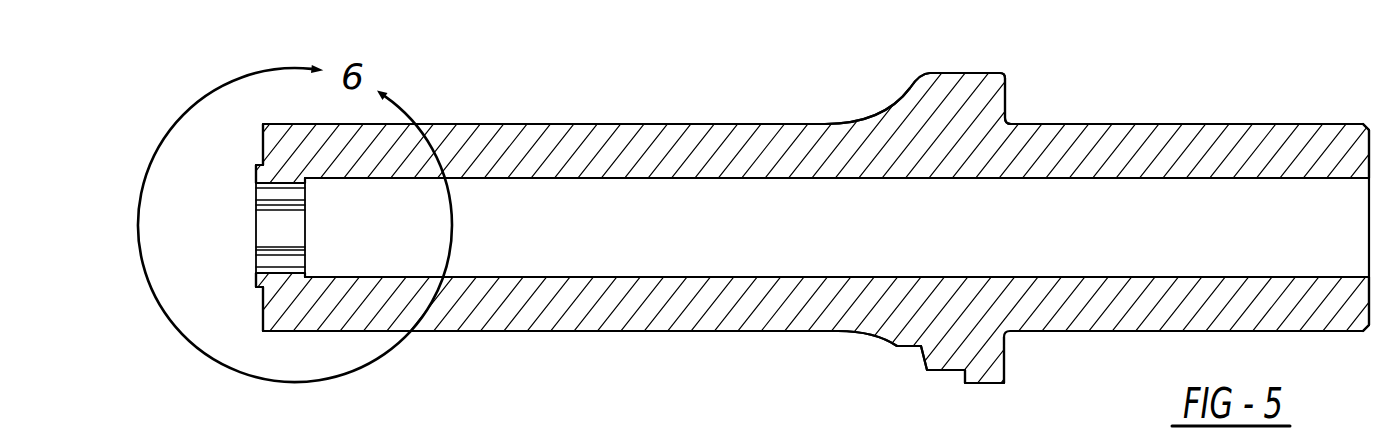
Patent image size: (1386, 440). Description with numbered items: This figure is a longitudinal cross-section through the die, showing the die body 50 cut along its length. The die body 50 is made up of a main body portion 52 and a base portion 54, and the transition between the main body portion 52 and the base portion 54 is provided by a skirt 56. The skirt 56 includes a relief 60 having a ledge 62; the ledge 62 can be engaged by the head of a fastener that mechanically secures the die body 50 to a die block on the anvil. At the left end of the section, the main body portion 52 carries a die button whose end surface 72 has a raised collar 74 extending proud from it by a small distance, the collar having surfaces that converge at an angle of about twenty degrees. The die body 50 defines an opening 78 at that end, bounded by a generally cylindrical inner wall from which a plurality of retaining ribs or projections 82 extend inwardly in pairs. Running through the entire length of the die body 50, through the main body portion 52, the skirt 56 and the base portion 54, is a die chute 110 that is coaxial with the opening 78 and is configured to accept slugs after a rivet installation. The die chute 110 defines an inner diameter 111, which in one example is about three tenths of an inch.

The die body 50 is at (557, 152).
The main body portion 52 is at (543, 313).
The base portion 54 is at (1197, 147).
The skirt 56 is at (965, 102).
The relief 60 is at (928, 347).
The ledge 62 is at (965, 358).
The end surface 72 is at (340, 439).
The raised collar 74 is at (254, 174).
The opening 78 is at (246, 225).
The projections 82 is at (290, 250).
The die chute 110 is at (638, 180).
The inner diameter 111 is at (783, 178).